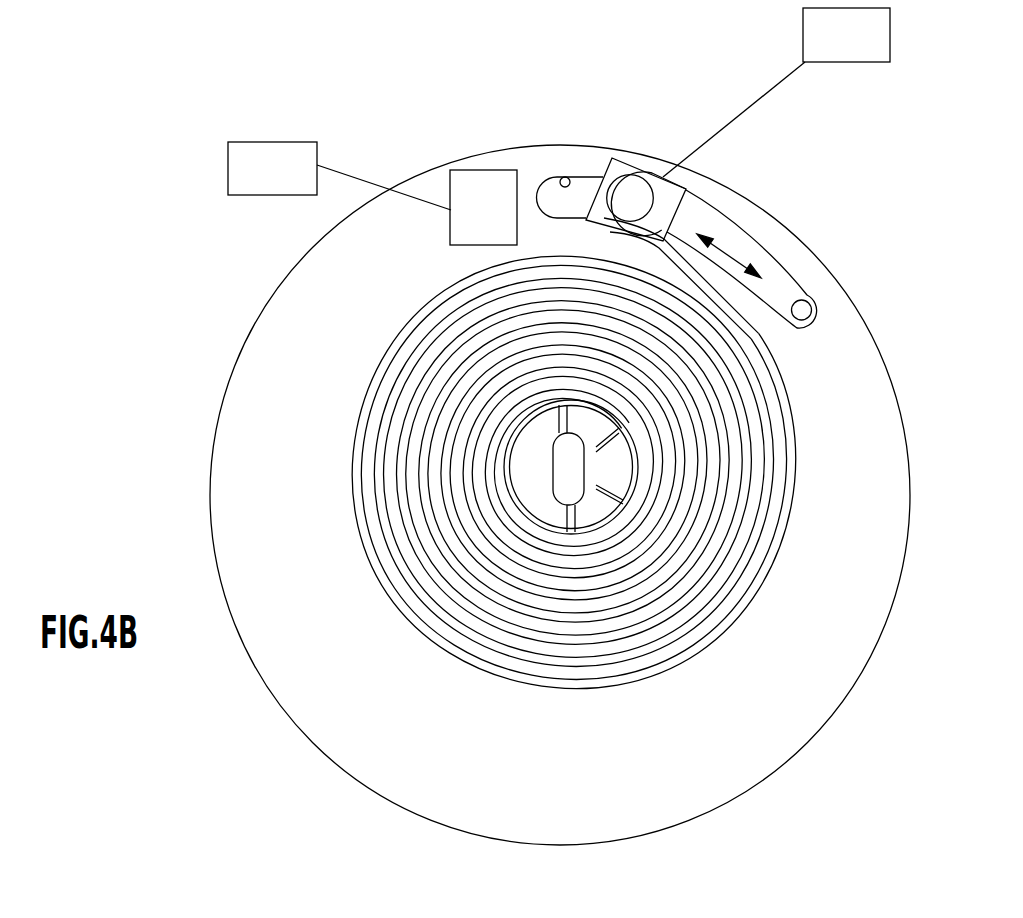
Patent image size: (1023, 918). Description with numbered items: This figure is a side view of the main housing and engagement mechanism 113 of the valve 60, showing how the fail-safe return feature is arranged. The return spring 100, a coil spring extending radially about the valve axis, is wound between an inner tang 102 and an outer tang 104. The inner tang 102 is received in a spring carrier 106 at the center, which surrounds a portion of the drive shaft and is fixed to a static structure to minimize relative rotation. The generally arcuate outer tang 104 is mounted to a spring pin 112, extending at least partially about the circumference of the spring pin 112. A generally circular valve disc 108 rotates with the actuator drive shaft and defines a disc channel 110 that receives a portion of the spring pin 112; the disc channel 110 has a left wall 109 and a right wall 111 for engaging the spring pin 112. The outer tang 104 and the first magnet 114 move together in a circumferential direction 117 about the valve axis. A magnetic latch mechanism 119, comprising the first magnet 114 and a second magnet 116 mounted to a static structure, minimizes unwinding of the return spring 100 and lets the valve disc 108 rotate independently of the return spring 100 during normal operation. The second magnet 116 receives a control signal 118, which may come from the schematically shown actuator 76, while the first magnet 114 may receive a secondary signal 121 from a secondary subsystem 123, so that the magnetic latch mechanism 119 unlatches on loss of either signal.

The valve 60 is at (52, 191).
The actuator 76 is at (252, 142).
The return spring 100 is at (380, 590).
The inner tang 102 is at (570, 512).
The outer tang 104 is at (700, 206).
The spring carrier 106 is at (533, 508).
The valve disc 108 is at (896, 398).
The left wall 109 is at (547, 184).
The disc channel 110 is at (565, 177).
The right wall 111 is at (811, 299).
The spring pin 112 is at (633, 198).
The engagement mechanism 113 is at (854, 180).
The first magnet 114 is at (625, 158).
The second magnet 116 is at (497, 170).
The circumferential direction 117 is at (732, 253).
The control signal 118 is at (352, 172).
The magnetic latch mechanism 119 is at (452, 94).
The secondary signal 121 is at (752, 104).
The secondary subsystem 123 is at (890, 42).